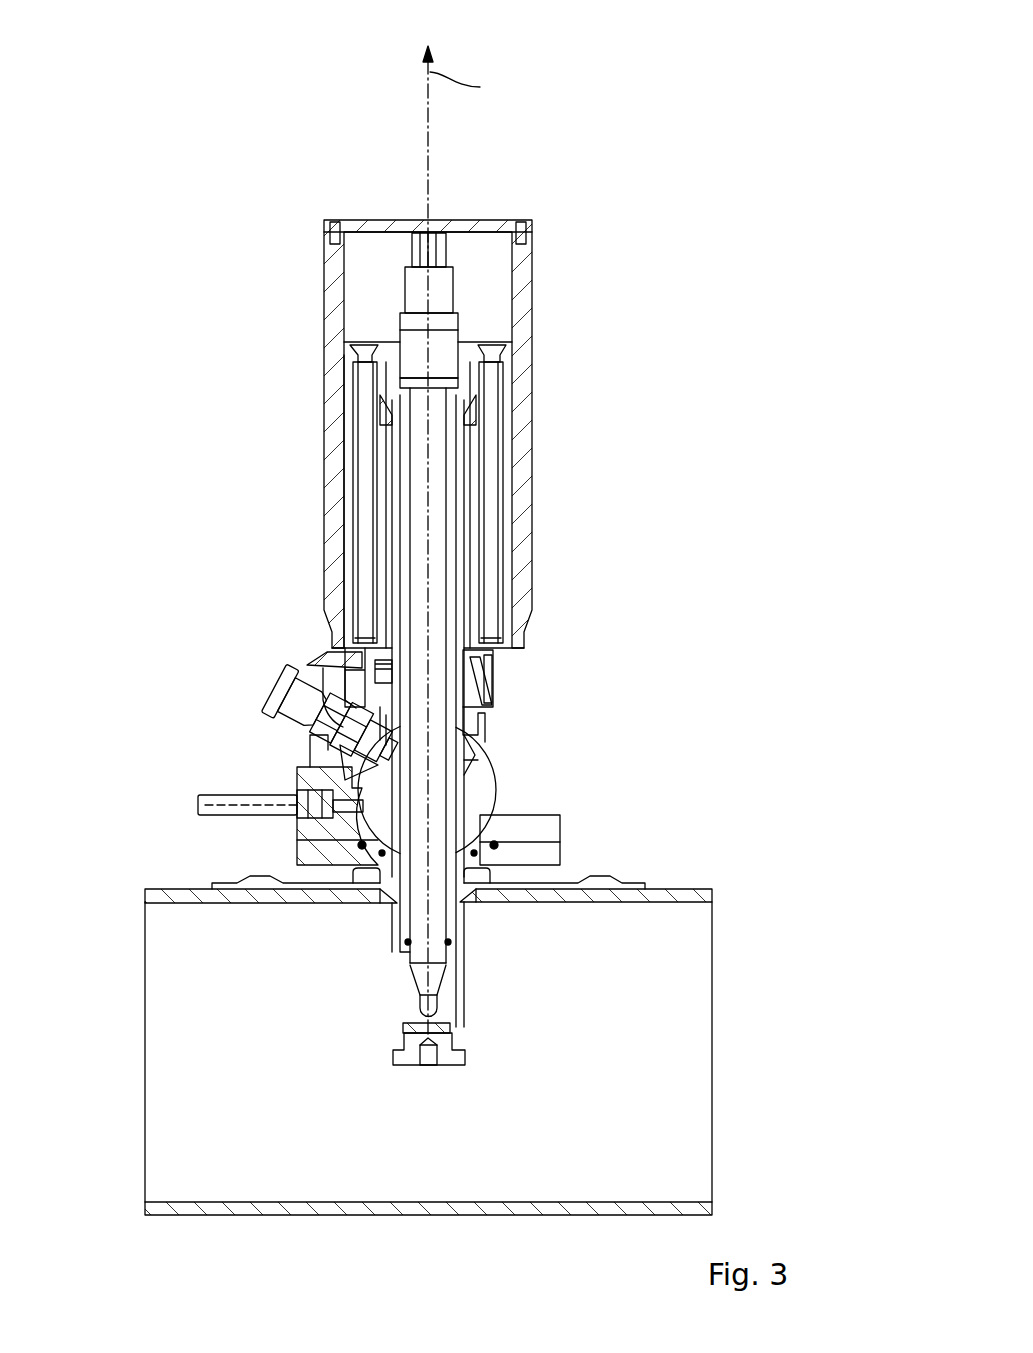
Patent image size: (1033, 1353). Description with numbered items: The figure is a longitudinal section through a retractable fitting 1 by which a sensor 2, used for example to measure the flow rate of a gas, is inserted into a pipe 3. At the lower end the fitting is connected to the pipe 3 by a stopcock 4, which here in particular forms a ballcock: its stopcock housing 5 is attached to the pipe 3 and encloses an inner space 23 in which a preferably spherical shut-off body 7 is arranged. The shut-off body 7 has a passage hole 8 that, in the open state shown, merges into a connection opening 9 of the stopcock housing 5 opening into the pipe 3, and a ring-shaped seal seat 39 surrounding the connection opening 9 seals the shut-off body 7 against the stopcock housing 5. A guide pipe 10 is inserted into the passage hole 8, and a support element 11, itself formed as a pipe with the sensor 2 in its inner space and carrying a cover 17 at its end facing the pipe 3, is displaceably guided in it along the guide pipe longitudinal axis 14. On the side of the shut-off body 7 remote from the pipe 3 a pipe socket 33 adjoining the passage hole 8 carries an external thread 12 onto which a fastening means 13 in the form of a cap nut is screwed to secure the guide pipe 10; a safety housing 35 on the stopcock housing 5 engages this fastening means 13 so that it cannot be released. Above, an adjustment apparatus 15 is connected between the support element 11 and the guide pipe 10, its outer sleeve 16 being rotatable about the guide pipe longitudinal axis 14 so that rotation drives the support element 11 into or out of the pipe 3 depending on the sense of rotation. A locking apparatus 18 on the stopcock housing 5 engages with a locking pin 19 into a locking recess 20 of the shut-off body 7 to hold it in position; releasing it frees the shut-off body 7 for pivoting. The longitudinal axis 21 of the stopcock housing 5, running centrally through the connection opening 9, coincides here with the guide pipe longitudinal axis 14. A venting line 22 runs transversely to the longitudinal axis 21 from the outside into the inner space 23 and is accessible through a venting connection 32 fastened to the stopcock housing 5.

The retractable fitting 1 is at (208, 96).
The sensor 2 is at (422, 1005).
The pipe 3 is at (672, 888).
The stopcock 4 is at (500, 722).
The stopcock housing 5 is at (555, 830).
The shut-off body 7 is at (482, 775).
The passage hole 8 is at (466, 790).
The connection opening 9 is at (390, 876).
The guide pipe 10 is at (470, 764).
The support element 11 is at (460, 930).
The external thread 12 is at (480, 690).
The fastening means 13 is at (478, 665).
The guide pipe longitudinal axis 14 is at (430, 497).
The adjustment apparatus 15 is at (533, 445).
The outer sleeve 16 is at (522, 300).
The cover 17 is at (446, 1066).
The locking apparatus 18 is at (298, 683).
The locking pin 19 is at (318, 745).
The locking recess 20 is at (325, 762).
The longitudinal axis 21 is at (430, 140).
The venting line 22 is at (318, 826).
The inner space 23 is at (297, 857).
The venting connection 32 is at (198, 795).
The pipe socket 33 is at (482, 678).
The safety housing 35 is at (343, 652).
The seal seat 39 is at (485, 860).